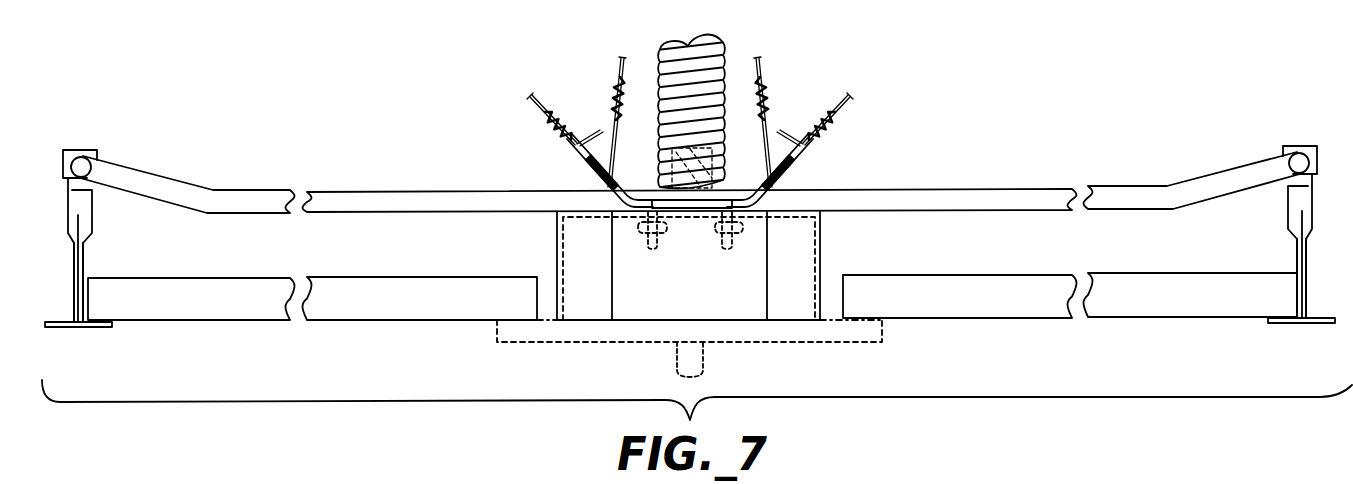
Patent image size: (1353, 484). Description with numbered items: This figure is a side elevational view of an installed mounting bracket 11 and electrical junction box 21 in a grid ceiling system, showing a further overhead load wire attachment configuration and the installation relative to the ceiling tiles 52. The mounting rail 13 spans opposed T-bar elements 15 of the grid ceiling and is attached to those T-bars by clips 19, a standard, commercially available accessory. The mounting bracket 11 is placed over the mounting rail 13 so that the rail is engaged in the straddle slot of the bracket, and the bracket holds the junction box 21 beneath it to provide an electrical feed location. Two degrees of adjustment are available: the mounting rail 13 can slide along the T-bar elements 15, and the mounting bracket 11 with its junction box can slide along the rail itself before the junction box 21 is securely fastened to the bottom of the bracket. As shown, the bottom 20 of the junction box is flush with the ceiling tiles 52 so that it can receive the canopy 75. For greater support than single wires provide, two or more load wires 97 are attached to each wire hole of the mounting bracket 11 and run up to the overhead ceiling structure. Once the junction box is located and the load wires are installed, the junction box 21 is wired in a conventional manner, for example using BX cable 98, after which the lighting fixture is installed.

The mounting bracket 11 is at (782, 185).
The mounting rail 13 is at (510, 190).
The T-bar elements 15 is at (83, 265).
The clips 19 is at (67, 225).
The bottom of the junction box 20 is at (788, 318).
The electrical junction box 21 is at (793, 255).
The ceiling tiles 52 is at (443, 320).
The canopy 75 is at (590, 342).
The load wires 97 is at (565, 123).
The BX cable 98 is at (727, 53).